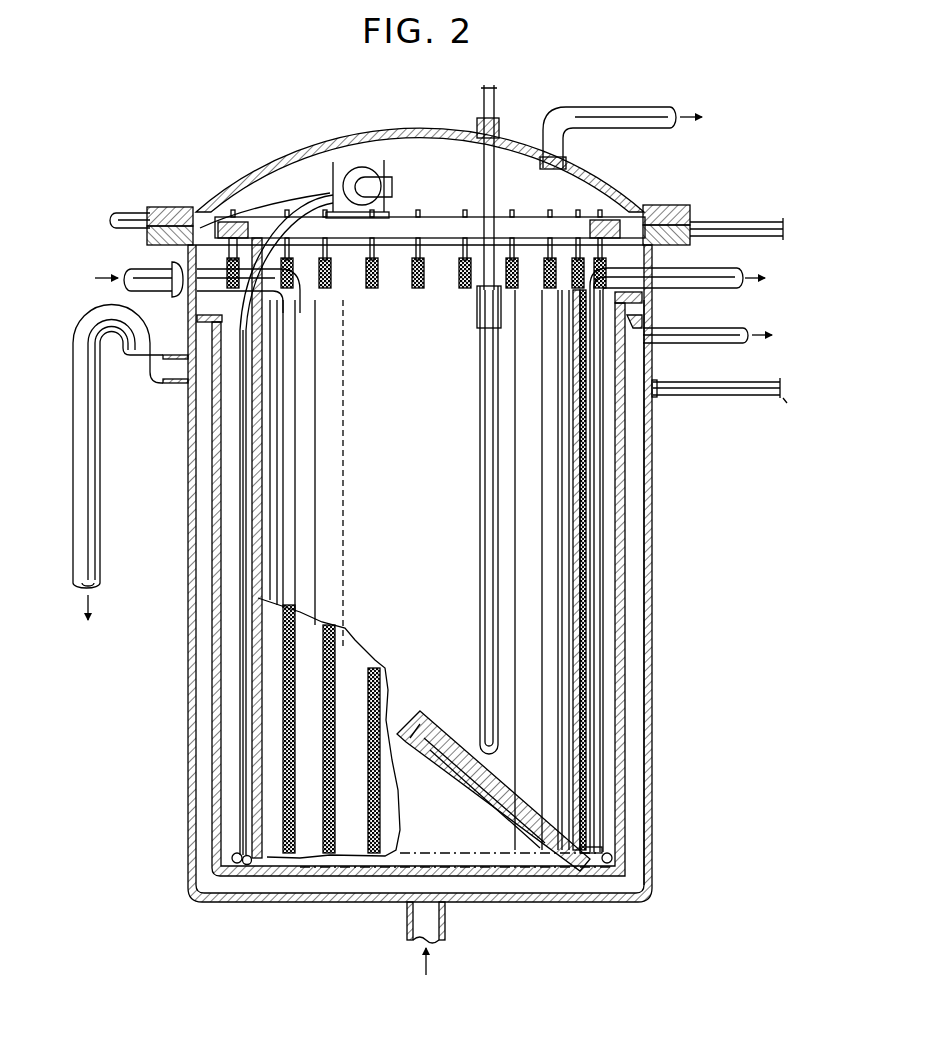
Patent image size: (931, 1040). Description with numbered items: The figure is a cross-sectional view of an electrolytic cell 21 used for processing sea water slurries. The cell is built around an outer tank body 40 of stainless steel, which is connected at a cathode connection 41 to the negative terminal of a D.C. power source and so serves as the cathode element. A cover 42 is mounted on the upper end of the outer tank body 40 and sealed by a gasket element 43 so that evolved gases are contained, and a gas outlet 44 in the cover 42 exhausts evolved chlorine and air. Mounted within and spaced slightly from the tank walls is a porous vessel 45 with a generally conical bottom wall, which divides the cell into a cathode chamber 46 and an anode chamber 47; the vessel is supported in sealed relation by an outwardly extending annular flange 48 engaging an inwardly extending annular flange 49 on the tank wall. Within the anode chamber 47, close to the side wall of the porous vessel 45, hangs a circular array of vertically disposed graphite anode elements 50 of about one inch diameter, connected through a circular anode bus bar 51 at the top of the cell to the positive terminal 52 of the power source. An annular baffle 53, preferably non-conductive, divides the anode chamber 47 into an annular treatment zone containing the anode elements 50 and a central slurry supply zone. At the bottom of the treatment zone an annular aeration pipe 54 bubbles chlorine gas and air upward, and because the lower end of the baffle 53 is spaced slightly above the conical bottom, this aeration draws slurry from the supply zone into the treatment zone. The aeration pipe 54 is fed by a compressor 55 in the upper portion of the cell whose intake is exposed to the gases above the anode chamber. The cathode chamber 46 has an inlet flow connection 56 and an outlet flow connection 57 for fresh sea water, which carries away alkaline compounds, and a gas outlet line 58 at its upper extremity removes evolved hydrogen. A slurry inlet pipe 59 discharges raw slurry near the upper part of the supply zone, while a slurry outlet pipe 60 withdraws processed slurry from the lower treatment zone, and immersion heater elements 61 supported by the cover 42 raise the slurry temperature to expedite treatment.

The electrolytic cell 21 is at (258, 162).
The outer tank body 40 is at (650, 682).
The cathode connection 41 is at (745, 368).
The cover 42 is at (608, 181).
The gasket element 43 is at (692, 223).
The gas outlet 44 is at (618, 108).
The porous vessel 45 is at (622, 564).
The cathode chamber 46 is at (640, 765).
The anode chamber 47 is at (560, 807).
The outwardly extending annular flange 48 is at (650, 308).
The inwardly extending annular flange 49 is at (650, 345).
The graphite anode elements 50 is at (287, 673).
The circular anode bus bar 51 is at (402, 228).
The positive terminal 52 is at (753, 225).
The annular baffle 53 is at (262, 385).
The annular aeration pipe 54 is at (250, 867).
The compressor 55 is at (362, 163).
The inlet flow connection 56 is at (433, 923).
The outlet flow connection 57 is at (92, 325).
The gas outlet line 58 is at (725, 328).
The slurry inlet pipe 59 is at (138, 273).
The slurry outlet pipe 60 is at (602, 817).
The immersion heater elements 61 is at (480, 500).